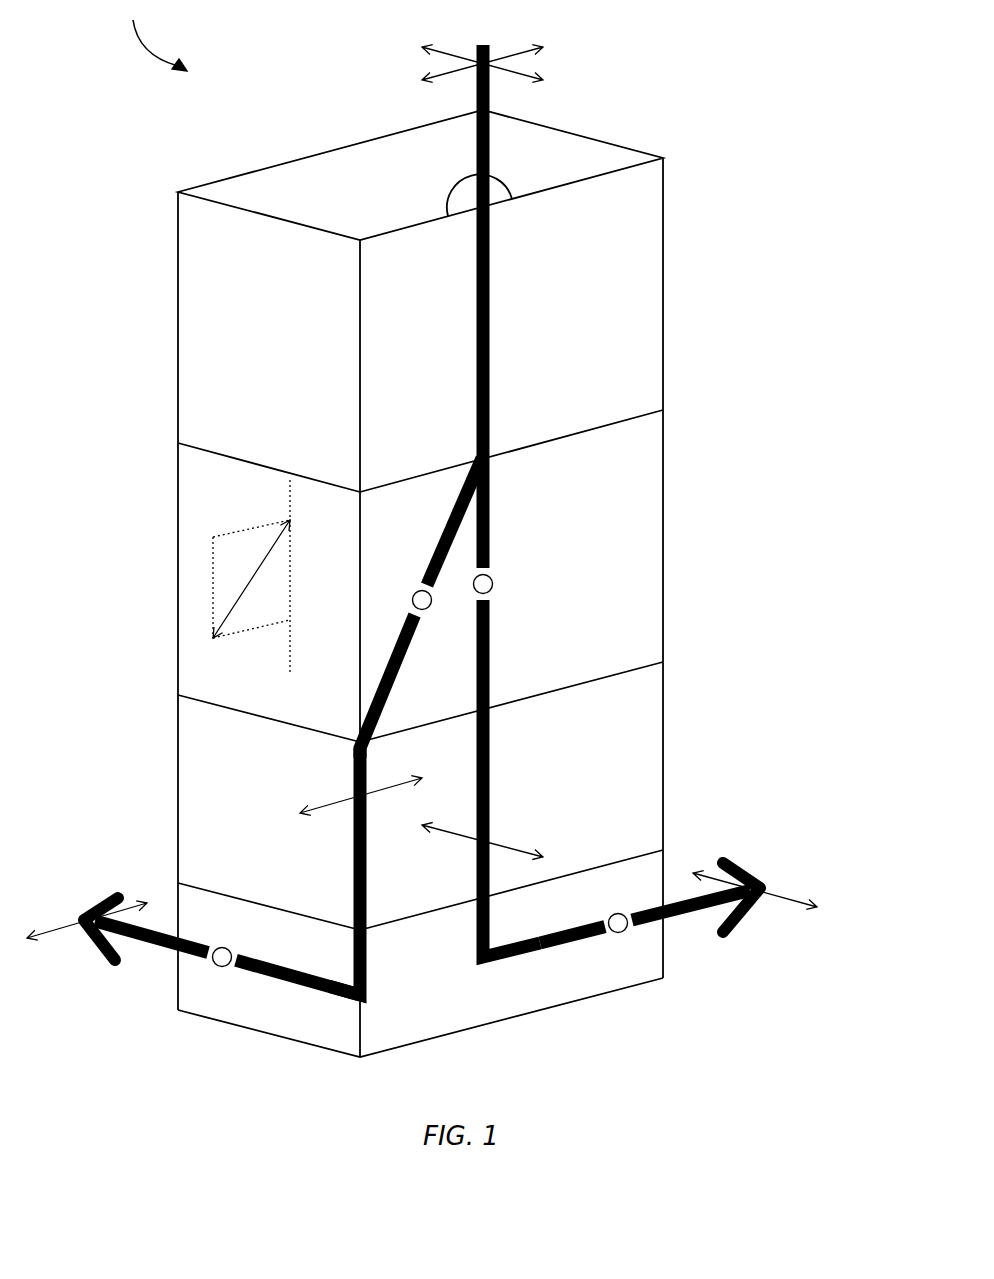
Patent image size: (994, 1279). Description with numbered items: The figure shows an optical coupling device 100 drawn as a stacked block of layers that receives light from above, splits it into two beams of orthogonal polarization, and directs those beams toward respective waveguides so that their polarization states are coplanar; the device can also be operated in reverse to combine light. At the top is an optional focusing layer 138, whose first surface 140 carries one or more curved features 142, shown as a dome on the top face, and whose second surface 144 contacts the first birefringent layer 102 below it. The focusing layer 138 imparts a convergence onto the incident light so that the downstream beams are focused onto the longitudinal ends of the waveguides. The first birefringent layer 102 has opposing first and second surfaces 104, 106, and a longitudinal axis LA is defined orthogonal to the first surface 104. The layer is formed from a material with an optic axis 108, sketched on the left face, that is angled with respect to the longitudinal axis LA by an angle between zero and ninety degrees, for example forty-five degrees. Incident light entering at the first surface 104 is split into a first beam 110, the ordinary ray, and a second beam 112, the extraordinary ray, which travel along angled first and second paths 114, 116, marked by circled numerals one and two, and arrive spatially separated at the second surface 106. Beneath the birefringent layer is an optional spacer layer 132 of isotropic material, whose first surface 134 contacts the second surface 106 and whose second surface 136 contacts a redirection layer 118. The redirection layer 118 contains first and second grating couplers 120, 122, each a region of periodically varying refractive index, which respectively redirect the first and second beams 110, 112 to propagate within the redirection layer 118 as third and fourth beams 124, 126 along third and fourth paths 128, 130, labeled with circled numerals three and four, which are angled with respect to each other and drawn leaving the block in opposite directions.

The optical coupling device 100 is at (153, 35).
The first birefringent layer 102 is at (648, 460).
The first surface 104 is at (588, 432).
The second surface 106 is at (598, 675).
The optic axis 108 is at (250, 582).
The first beam 110 is at (490, 678).
The second beam 112 is at (378, 714).
The first path 114 is at (490, 632).
The second path 116 is at (398, 680).
The redirection layer 118 is at (648, 957).
The first grating coupler 120 is at (496, 978).
The second grating coupler 122 is at (351, 1014).
The third beam 124 is at (520, 955).
The fourth beam 126 is at (305, 987).
The third path 128 is at (590, 940).
The fourth path 130 is at (248, 970).
The spacer layer 132 is at (650, 702).
The first surface 134 is at (617, 677).
The second surface 136 is at (618, 860).
The focusing layer 138 is at (622, 232).
The first surface 140 is at (557, 193).
The curved features 142 is at (447, 212).
The second surface 144 is at (602, 425).
The longitudinal axis LA is at (290, 505).